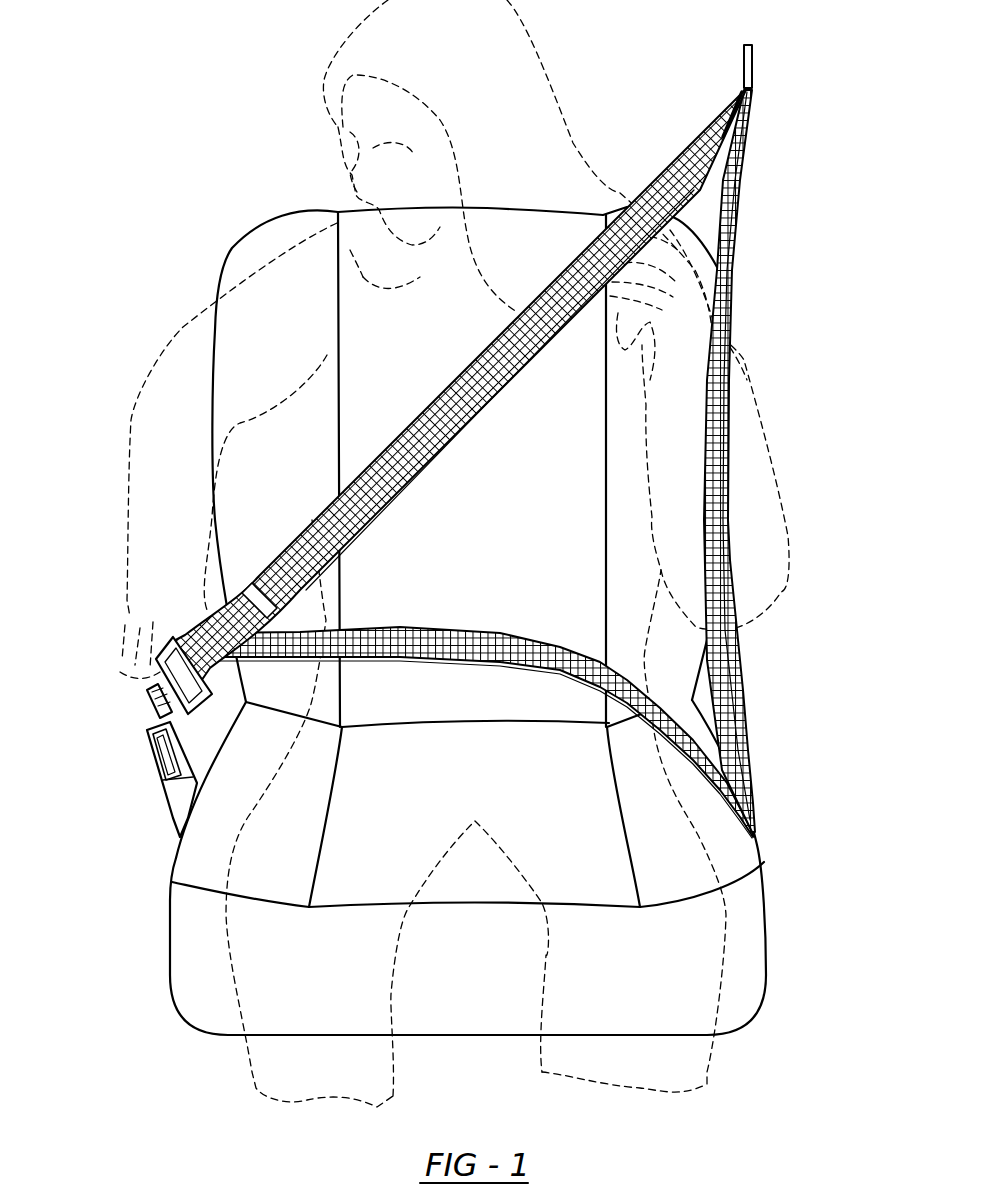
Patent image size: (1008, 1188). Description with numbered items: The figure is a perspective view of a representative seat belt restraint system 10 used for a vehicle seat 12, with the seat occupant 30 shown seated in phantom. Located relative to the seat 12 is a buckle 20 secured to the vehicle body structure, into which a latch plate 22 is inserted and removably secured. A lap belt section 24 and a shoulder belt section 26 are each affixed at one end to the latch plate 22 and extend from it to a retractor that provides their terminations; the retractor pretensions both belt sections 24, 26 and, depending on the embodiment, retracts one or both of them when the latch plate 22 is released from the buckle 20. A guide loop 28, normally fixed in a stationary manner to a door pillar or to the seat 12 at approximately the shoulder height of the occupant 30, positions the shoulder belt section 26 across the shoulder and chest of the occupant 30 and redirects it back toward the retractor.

The restraint system 10 is at (790, 158).
The vehicle seat 12 is at (765, 866).
The buckle 20 is at (157, 800).
The latch plate 22 is at (150, 702).
The lap belt section 24 is at (430, 638).
The shoulder belt section 26 is at (672, 183).
The guide loop 28 is at (752, 65).
The occupant 30 is at (766, 459).